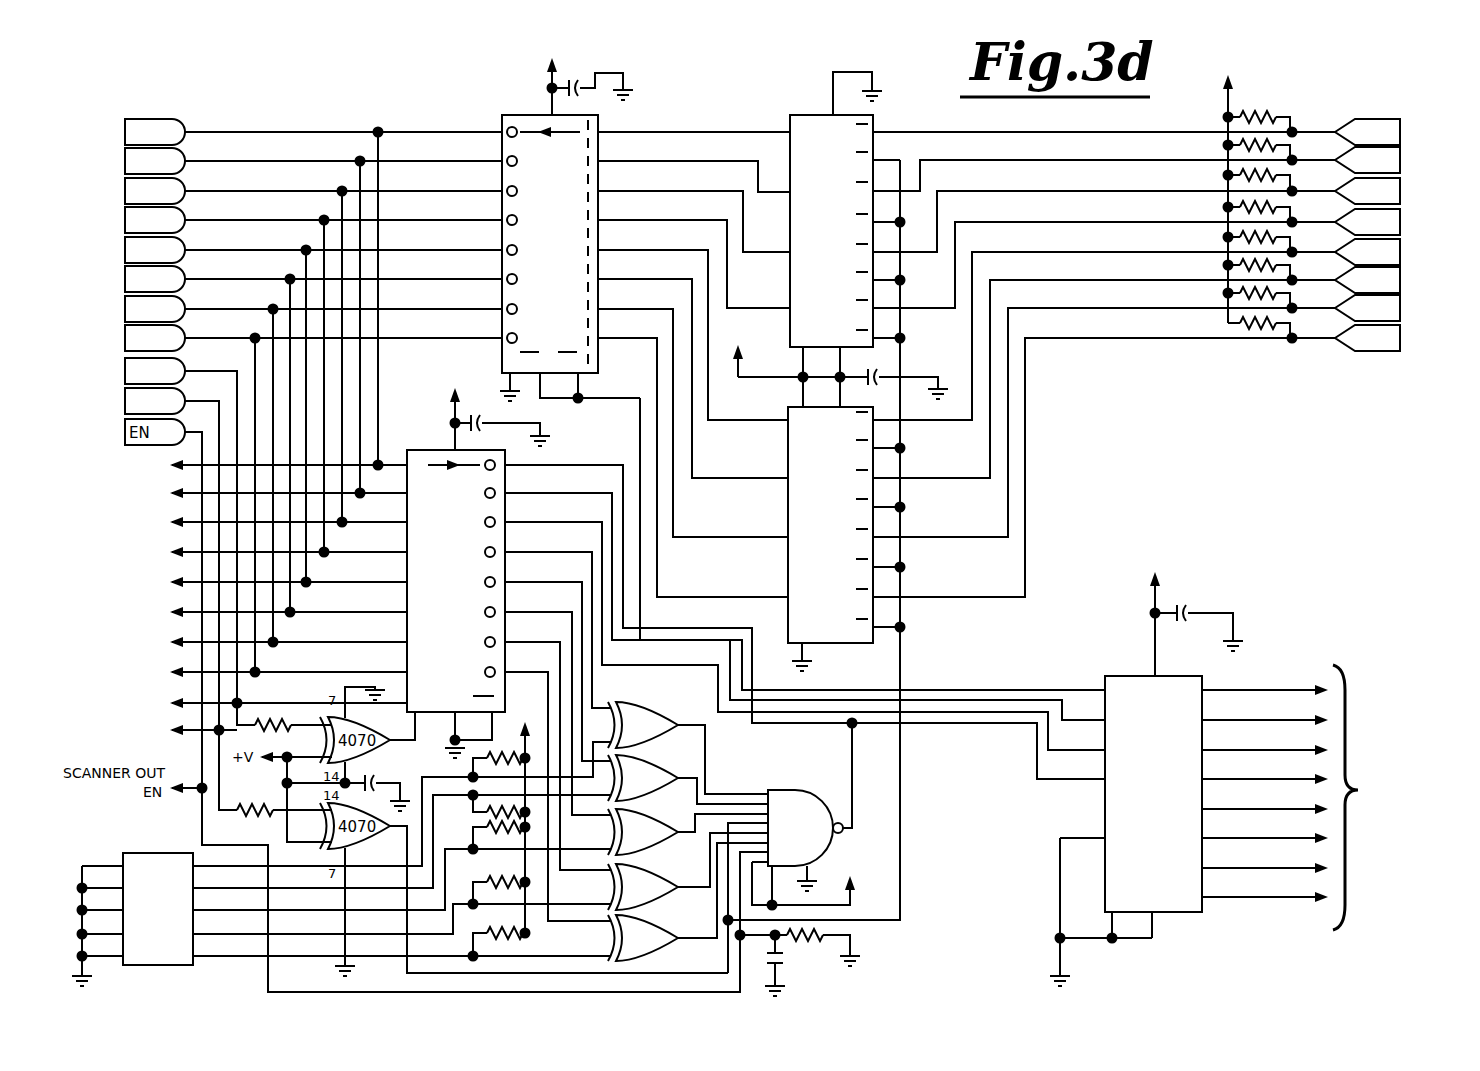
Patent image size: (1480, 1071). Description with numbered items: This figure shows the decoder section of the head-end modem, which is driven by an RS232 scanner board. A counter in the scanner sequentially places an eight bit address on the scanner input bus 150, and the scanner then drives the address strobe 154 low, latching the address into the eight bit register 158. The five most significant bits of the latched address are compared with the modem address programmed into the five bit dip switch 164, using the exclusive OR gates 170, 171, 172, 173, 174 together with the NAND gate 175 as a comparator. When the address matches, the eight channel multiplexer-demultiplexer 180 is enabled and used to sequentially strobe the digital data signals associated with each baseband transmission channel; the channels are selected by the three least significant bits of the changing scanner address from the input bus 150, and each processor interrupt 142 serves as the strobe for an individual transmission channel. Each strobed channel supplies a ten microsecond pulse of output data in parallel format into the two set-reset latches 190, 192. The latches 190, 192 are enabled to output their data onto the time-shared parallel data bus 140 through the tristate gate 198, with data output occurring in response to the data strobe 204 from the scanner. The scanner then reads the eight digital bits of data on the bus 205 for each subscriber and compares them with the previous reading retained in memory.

The parallel data bus 140 is at (1324, 108).
The processor interrupt 142 is at (1282, 668).
The scanner input bus 150 is at (316, 104).
The address strobe 154 is at (196, 370).
The eight bit register 158 is at (472, 670).
The five bit dip switch 164 is at (148, 853).
The exclusive OR gate 170 is at (685, 735).
The exclusive OR gate 171 is at (682, 770).
The exclusive OR gate 172 is at (652, 851).
The exclusive OR gate 173 is at (660, 905).
The exclusive OR gate 174 is at (668, 955).
The NAND gate 175 is at (790, 798).
The eight channel multiplexer-demultiplexer 180 is at (1166, 886).
The set-reset latch 190 is at (840, 296).
The set-reset latch 192 is at (838, 589).
The tristate gate 198 is at (562, 342).
The data strobe 204 is at (186, 402).
The bus 205 is at (108, 472).